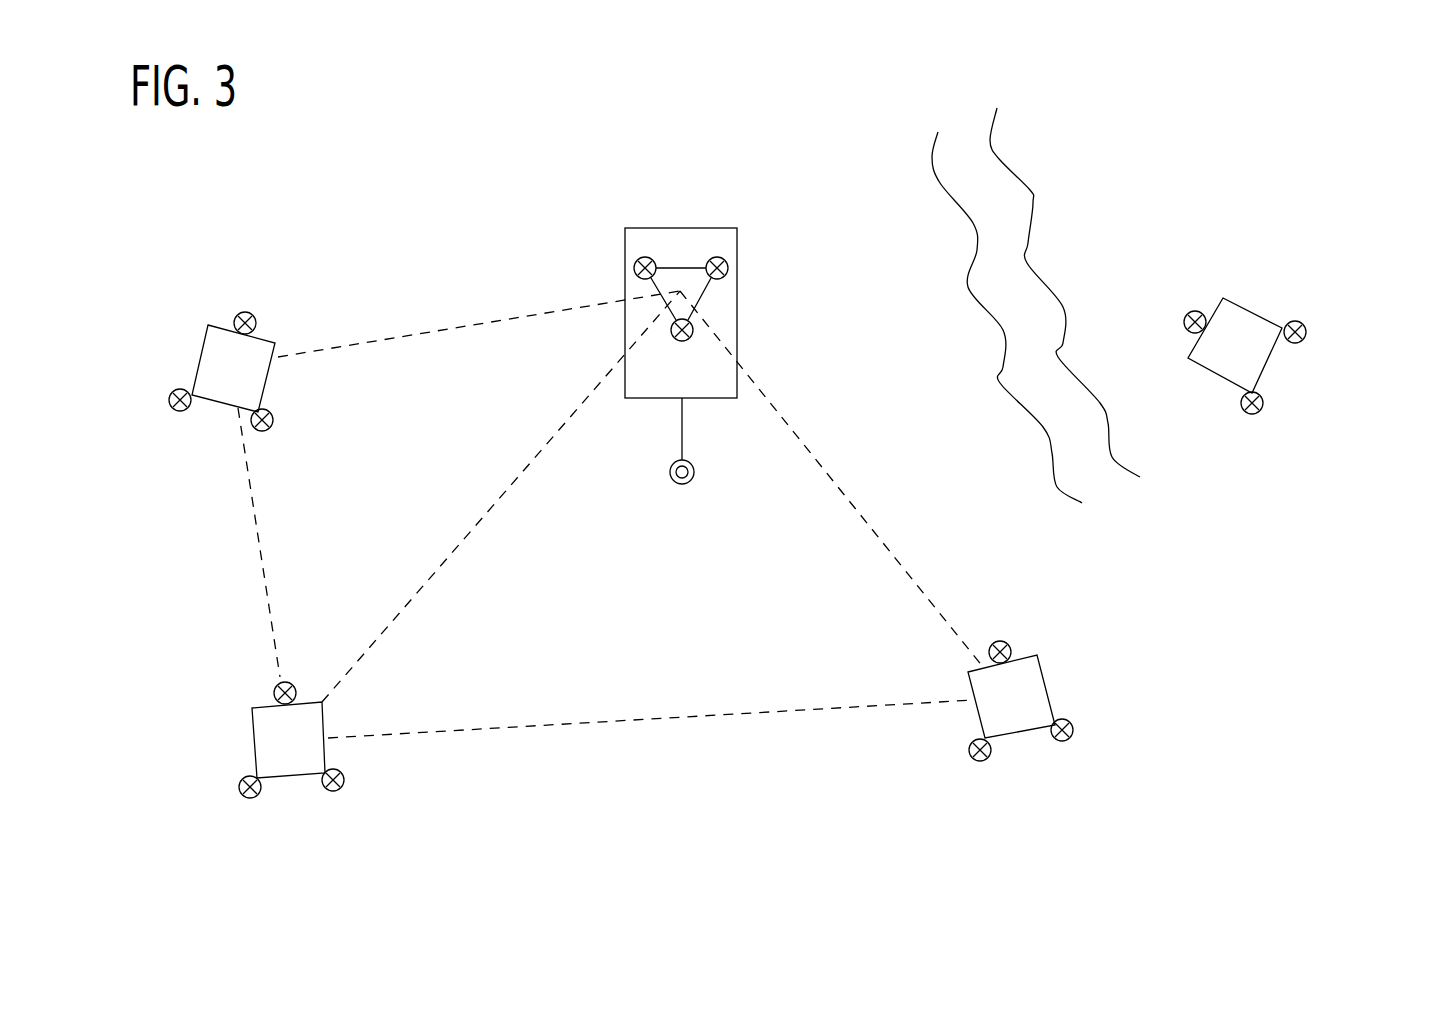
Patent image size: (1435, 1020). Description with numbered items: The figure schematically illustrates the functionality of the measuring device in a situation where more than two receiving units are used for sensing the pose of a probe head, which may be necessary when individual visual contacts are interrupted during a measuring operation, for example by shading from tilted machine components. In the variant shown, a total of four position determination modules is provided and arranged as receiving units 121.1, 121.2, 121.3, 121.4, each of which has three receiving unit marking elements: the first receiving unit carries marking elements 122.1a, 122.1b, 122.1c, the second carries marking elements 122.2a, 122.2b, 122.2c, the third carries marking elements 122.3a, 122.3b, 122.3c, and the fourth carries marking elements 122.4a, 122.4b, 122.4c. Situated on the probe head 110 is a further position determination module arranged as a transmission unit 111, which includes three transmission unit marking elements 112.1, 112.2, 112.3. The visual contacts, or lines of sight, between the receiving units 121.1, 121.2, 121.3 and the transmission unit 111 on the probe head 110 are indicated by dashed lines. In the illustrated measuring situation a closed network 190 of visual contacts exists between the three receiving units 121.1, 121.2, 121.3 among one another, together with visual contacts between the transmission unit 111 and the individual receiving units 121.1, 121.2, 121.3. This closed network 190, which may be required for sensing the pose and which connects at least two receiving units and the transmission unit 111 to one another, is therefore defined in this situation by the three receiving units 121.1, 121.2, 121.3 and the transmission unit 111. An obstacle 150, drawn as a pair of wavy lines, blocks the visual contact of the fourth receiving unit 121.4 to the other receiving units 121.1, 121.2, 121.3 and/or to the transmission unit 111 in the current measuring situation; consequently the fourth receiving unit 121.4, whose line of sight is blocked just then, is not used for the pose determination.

The probe head 110 is at (682, 242).
The transmission unit 111 is at (705, 293).
The transmission unit marking element 112.1 is at (645, 255).
The transmission unit marking element 112.2 is at (717, 255).
The transmission unit marking element 112.3 is at (682, 343).
The receiving unit 121.1 is at (215, 350).
The receiving unit 121.2 is at (265, 738).
The receiving unit 121.3 is at (1035, 692).
The fourth receiving unit 121.4 is at (1217, 358).
The receiving unit marking element 122.1a is at (242, 312).
The receiving unit marking element 122.1b is at (273, 418).
The receiving unit marking element 122.1c is at (175, 413).
The receiving unit marking element 122.2a is at (292, 682).
The receiving unit marking element 122.2b is at (337, 795).
The receiving unit marking element 122.2c is at (250, 800).
The receiving unit marking element 122.3a is at (1002, 642).
The receiving unit marking element 122.3b is at (1063, 742).
The receiving unit marking element 122.3c is at (980, 763).
The receiving unit marking element 122.4a is at (1197, 313).
The receiving unit marking element 122.4b is at (1307, 330).
The receiving unit marking element 122.4c is at (1252, 415).
The obstacle 150 is at (1033, 198).
The closed network 190 is at (650, 722).